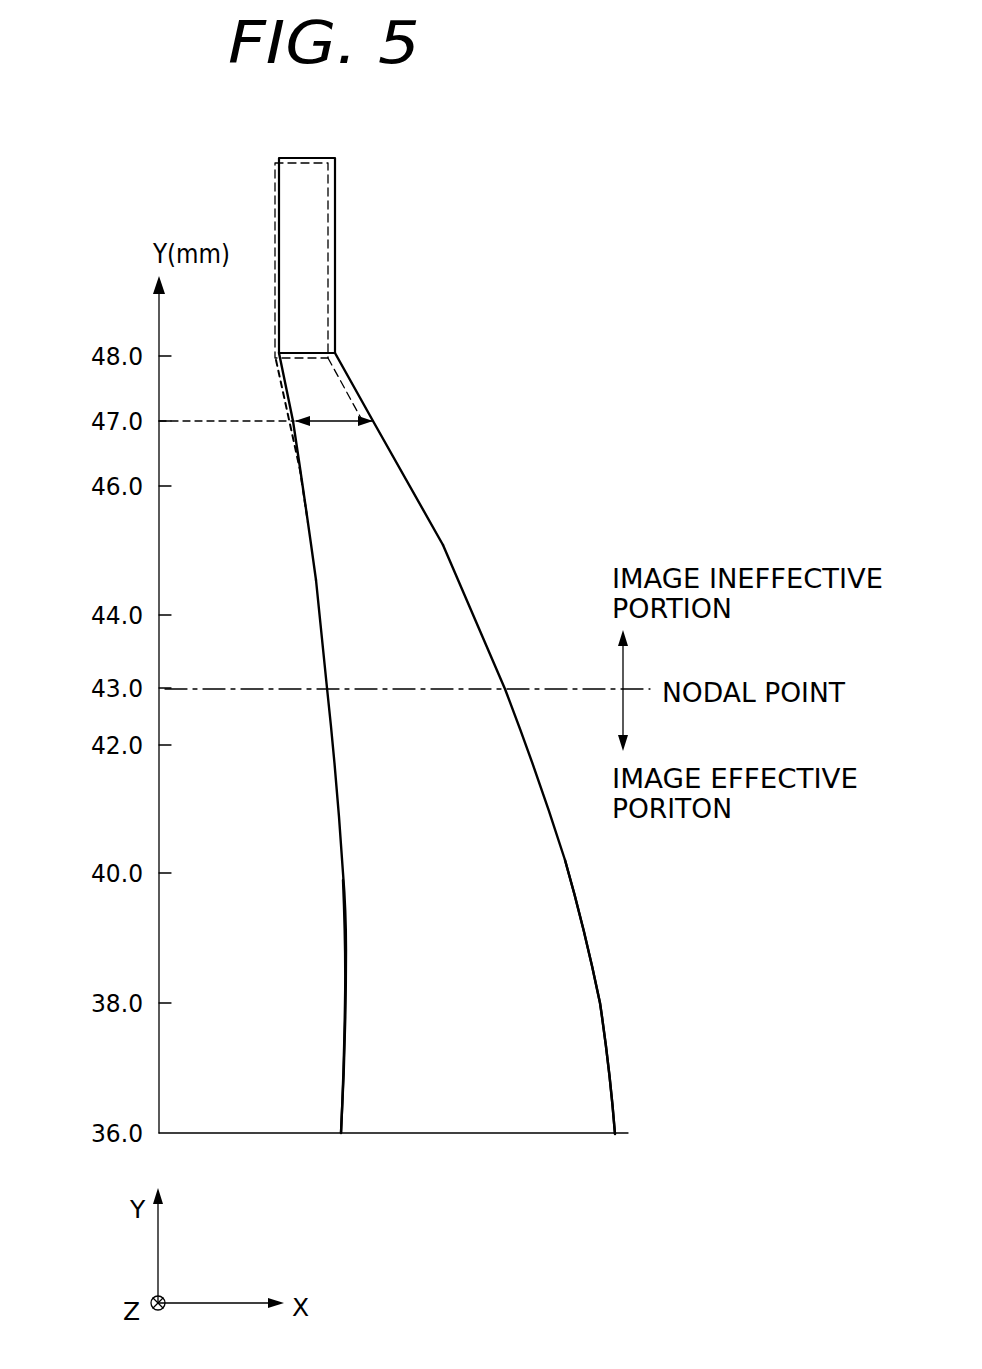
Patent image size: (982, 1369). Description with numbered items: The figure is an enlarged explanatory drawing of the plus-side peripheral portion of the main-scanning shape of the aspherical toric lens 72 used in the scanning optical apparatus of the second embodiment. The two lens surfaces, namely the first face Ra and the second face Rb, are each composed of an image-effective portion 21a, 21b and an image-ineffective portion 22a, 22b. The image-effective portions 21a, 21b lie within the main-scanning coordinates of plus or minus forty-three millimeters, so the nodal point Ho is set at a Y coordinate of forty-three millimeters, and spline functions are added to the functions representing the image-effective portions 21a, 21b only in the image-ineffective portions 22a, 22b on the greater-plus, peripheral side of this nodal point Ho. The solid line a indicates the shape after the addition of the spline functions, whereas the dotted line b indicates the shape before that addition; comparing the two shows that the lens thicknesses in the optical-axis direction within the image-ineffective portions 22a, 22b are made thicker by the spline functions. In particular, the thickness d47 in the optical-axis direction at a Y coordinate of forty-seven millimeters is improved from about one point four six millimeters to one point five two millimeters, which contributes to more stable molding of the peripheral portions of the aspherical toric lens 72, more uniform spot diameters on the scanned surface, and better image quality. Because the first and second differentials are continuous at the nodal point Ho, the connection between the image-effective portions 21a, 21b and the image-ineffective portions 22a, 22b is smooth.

The image-ineffective portion 22a is at (306, 526).
The image-ineffective portion 22b is at (444, 545).
The image-effective portion 21a is at (342, 882).
The image-effective portion 21b is at (576, 893).
The aspherical toric lens 72 is at (400, 757).
The solid line a is at (336, 292).
The dotted line b is at (328, 242).
The first face Ra is at (344, 993).
The second face Rb is at (598, 995).
The thickness in the optical-axis direction at the coordinate Y=47 mm d47 is at (372, 424).
The nodal point Ho is at (326, 690).